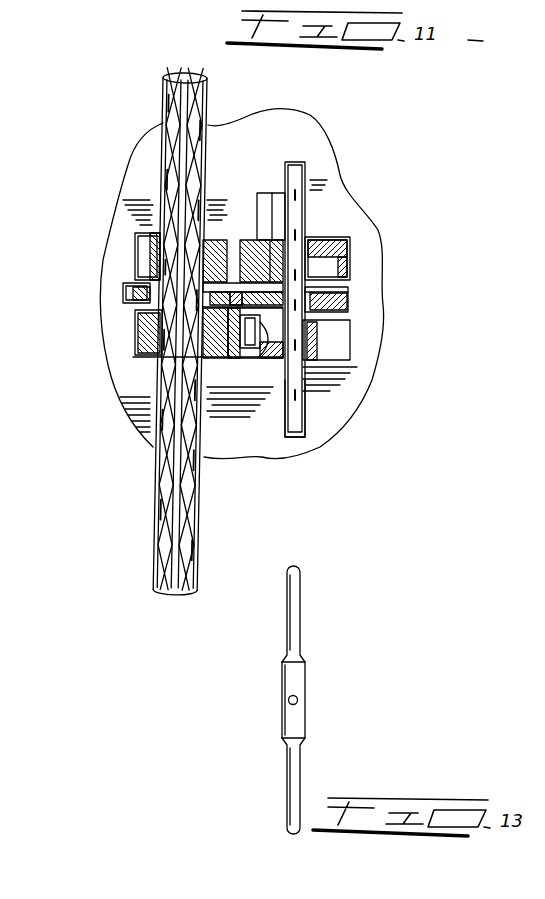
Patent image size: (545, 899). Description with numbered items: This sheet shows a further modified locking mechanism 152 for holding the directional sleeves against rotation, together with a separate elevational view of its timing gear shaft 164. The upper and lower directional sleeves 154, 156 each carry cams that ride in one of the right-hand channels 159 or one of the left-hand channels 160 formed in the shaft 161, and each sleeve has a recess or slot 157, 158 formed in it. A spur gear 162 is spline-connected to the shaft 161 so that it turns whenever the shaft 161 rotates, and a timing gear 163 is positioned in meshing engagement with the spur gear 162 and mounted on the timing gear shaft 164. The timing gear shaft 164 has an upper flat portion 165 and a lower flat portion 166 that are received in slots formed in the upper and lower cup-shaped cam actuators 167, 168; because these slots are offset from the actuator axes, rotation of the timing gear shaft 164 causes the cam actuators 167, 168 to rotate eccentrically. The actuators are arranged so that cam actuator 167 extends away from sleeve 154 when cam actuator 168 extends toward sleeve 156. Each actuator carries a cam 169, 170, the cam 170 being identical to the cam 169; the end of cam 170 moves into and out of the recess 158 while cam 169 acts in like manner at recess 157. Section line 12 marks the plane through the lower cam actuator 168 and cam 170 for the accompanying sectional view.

In FIG. 11, the section line 12- 12 is at (72, 348).
In FIG. 11, the locking mechanism 152 is at (368, 257).
In FIG. 11, the directional sleeve 154 is at (222, 195).
In FIG. 11, the directional sleeve 156 is at (158, 355).
In FIG. 11, the recess or slot 157 is at (143, 258).
In FIG. 11, the recess or slot 158 is at (207, 410).
In FIG. 11, the right-hand channels 159 is at (200, 106).
In FIG. 11, the left-hand channels 160 is at (172, 103).
In FIG. 11, the shaft 161 is at (172, 80).
In FIG. 11, the spur gear 162 is at (133, 307).
In FIG. 11, the timing gear 163 is at (347, 281).
In FIG. 13, the timing gear shaft 164 is at (298, 704).
In FIG. 11, the upper flat portion 165 is at (293, 210).
In FIG. 13, the upper flat portion 165 is at (287, 638).
In FIG. 11, the lower flat portion 166 is at (293, 417).
In FIG. 13, the lower flat portion 166 is at (300, 789).
In FIG. 11, the upper cup-shaped cam actuator 167 is at (338, 240).
In FIG. 11, the lower cup-shaped cam actuator 168 is at (337, 360).
In FIG. 11, the cam 169 is at (258, 240).
In FIG. 11, the cam 170 is at (207, 408).